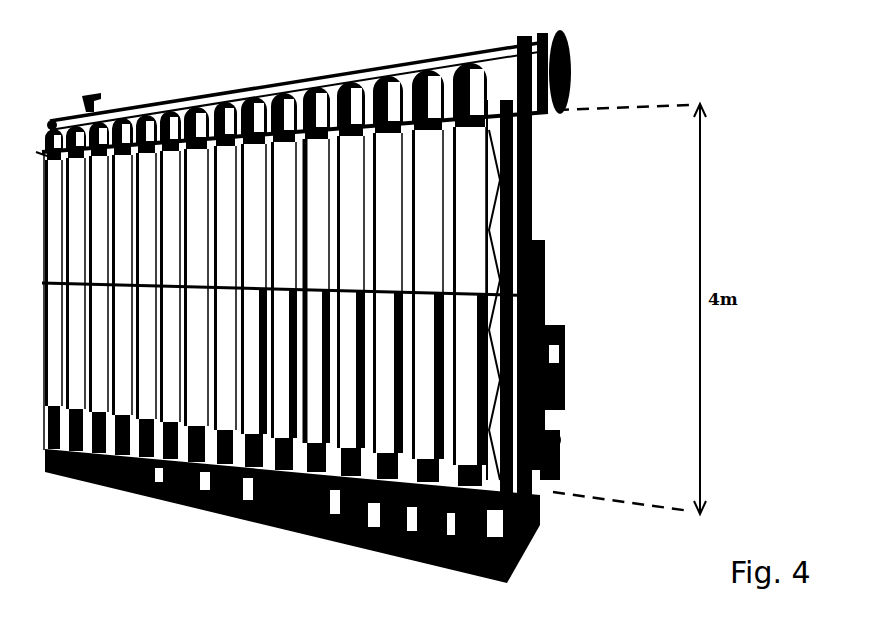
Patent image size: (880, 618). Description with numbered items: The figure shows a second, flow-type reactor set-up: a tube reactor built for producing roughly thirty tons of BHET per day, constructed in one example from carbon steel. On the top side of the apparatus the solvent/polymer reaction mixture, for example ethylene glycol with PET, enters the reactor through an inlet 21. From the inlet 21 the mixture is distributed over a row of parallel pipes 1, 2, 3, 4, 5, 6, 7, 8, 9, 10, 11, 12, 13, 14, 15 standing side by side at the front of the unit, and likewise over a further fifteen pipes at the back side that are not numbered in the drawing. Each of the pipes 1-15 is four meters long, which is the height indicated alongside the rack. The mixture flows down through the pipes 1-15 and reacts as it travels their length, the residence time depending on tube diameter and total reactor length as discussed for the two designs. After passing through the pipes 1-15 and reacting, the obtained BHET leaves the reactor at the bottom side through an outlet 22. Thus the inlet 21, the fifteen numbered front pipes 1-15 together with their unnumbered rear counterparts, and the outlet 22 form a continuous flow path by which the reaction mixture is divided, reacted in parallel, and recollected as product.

The parallel pipe 1 is at (54, 289).
The parallel pipe 2 is at (76, 288).
The parallel pipe 3 is at (99, 287).
The parallel pipe 4 is at (121, 286).
The parallel pipe 5 is at (146, 286).
The parallel pipe 6 is at (170, 285).
The parallel pipe 7 is at (196, 284).
The parallel pipe 8 is at (225, 283).
The parallel pipe 9 is at (254, 282).
The parallel pipe 10 is at (286, 281).
The parallel pipe 11 is at (319, 279).
The parallel pipe 12 is at (353, 279).
The parallel pipe 13 is at (389, 277).
The parallel pipe 14 is at (429, 276).
The parallel pipe 15 is at (470, 274).
The inlet 21 is at (581, 72).
The outlet 22 is at (564, 483).